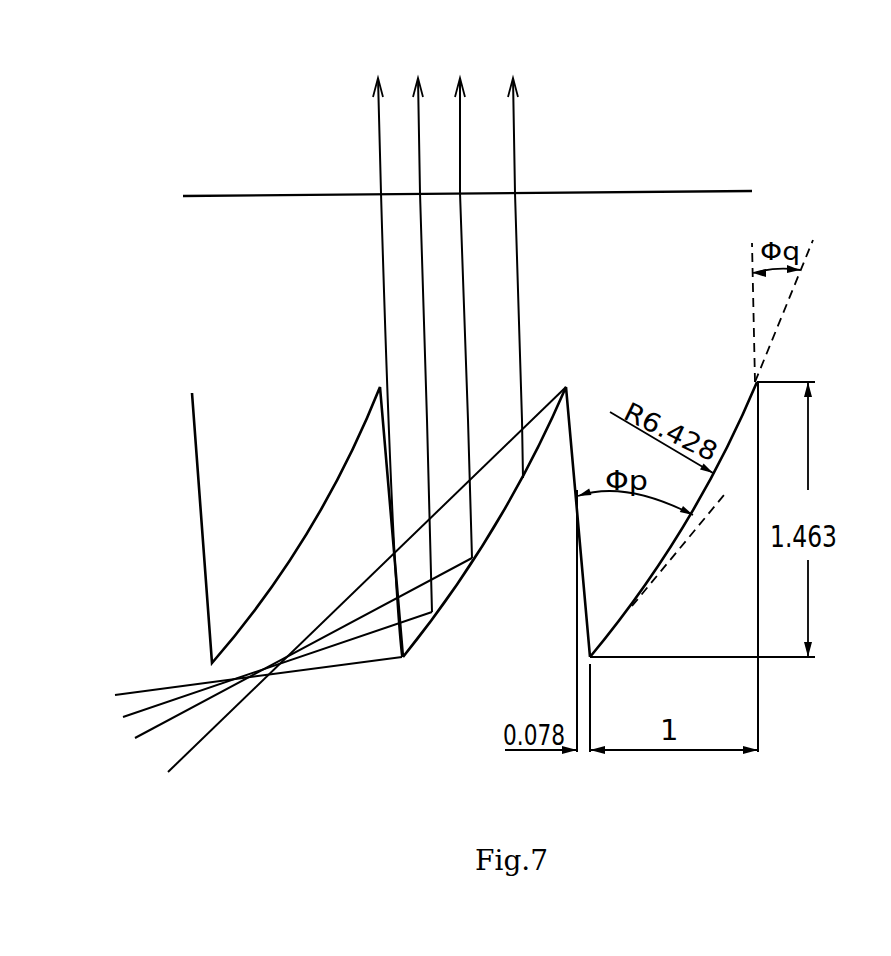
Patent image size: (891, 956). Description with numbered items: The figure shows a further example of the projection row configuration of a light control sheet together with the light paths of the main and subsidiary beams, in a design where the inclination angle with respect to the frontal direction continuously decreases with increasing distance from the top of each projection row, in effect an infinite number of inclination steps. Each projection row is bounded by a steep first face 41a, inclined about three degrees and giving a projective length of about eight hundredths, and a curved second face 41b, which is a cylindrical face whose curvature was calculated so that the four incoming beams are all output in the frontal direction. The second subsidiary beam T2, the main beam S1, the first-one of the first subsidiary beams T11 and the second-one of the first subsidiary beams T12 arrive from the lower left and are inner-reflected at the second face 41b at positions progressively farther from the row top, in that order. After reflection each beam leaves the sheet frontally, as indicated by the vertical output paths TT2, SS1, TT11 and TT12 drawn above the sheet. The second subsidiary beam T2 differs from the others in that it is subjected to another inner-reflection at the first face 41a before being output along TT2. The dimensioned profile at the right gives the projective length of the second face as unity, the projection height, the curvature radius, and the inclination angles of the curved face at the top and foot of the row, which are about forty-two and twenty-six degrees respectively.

The first face 41a is at (189, 451).
The second face 41b is at (458, 590).
The output path of second subsidiary beam TT2 is at (378, 121).
The output path of main beam SS1 is at (420, 327).
The output path of first-one of first subsidiary beams TT11 is at (461, 73).
The output path of second-one of first subsidiary beams TT12 is at (514, 112).
The second subsidiary beam T2 is at (116, 695).
The main beam S1 is at (123, 717).
The first-one of first subsidiary beams T11 is at (136, 738).
The second-one of first subsidiary beams T12 is at (169, 772).